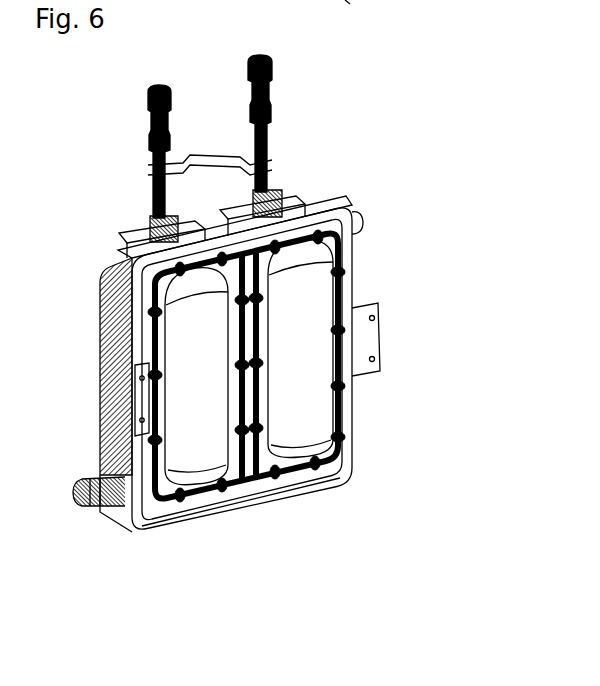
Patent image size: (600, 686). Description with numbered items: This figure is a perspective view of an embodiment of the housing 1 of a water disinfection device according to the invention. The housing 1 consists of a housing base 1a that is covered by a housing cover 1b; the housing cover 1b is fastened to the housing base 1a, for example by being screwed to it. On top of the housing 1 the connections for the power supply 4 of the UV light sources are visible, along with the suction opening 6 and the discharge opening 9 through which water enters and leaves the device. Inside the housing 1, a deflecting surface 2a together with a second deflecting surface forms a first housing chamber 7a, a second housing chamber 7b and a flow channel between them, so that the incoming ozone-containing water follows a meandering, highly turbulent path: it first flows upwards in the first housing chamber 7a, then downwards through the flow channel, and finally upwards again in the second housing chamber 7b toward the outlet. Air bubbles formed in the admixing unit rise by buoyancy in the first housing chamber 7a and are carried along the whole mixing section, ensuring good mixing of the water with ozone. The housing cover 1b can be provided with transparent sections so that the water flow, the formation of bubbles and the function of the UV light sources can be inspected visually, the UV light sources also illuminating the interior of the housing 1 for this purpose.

The housing 1 is at (388, 433).
The housing base 1a is at (124, 293).
The housing cover 1b is at (307, 490).
The deflecting surface 2a is at (339, 8).
The power supply 4 is at (161, 206).
The suction opening 6 is at (285, 200).
The first housing chamber 7a is at (183, 325).
The second housing chamber 7b is at (312, 295).
The discharge opening 9 is at (182, 212).